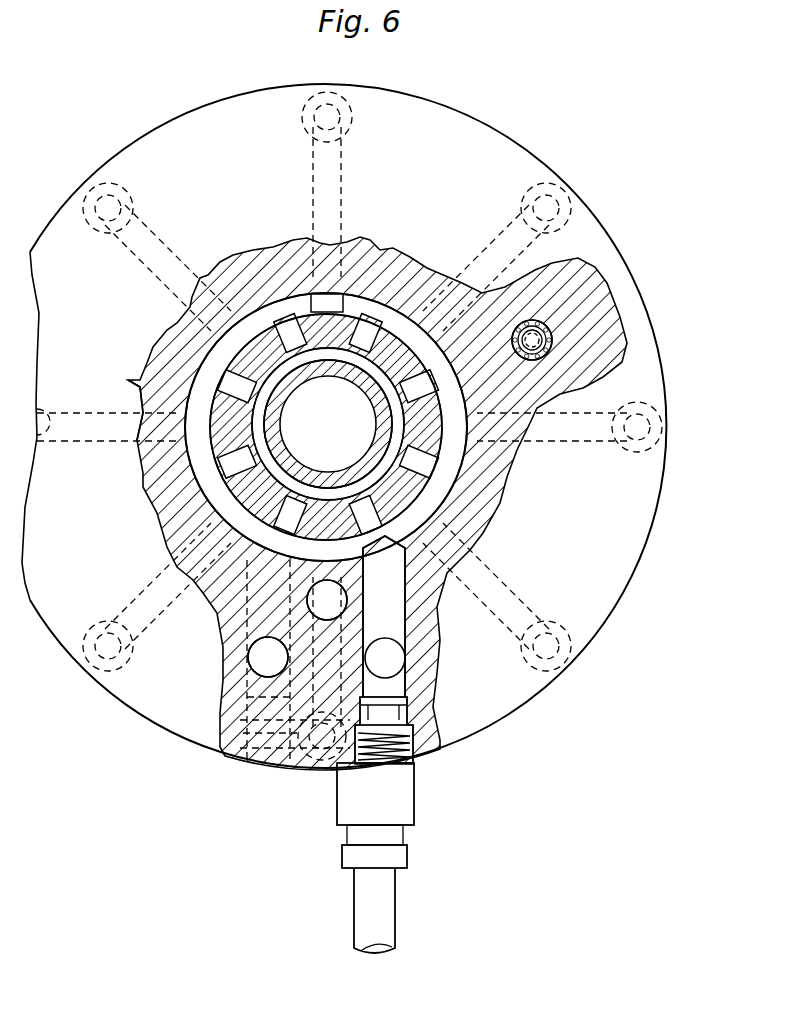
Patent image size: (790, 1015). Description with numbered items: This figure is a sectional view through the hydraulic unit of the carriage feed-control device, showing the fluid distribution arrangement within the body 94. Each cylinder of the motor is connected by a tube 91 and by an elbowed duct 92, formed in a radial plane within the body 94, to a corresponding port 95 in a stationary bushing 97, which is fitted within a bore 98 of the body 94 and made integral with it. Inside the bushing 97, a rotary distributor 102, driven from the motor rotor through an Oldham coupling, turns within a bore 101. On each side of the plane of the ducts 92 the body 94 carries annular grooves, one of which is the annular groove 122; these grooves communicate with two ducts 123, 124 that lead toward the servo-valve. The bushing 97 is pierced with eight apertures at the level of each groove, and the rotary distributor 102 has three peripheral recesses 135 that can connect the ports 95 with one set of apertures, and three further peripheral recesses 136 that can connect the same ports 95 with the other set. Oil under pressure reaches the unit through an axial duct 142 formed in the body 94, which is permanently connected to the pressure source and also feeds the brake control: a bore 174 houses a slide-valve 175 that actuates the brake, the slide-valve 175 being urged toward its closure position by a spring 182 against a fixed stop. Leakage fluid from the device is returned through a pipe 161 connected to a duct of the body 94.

The tube 91 is at (335, 108).
The elbowed duct 92 is at (310, 162).
The body 94 is at (590, 621).
The port 95 is at (305, 262).
The bushing 97 is at (470, 512).
The bore 98 is at (455, 460).
The bore 101 is at (128, 380).
The rotary distributor 102 is at (302, 372).
The annular groove 122 is at (452, 483).
The duct 123 is at (250, 612).
The duct 124 is at (402, 636).
The peripheral recess 135 is at (332, 497).
The peripheral recess 136 is at (303, 445).
The axial duct 142 is at (366, 606).
The pipe 161 is at (365, 897).
The bore 174 is at (550, 325).
The slide-valve 175 is at (540, 358).
The spring 182 is at (540, 360).